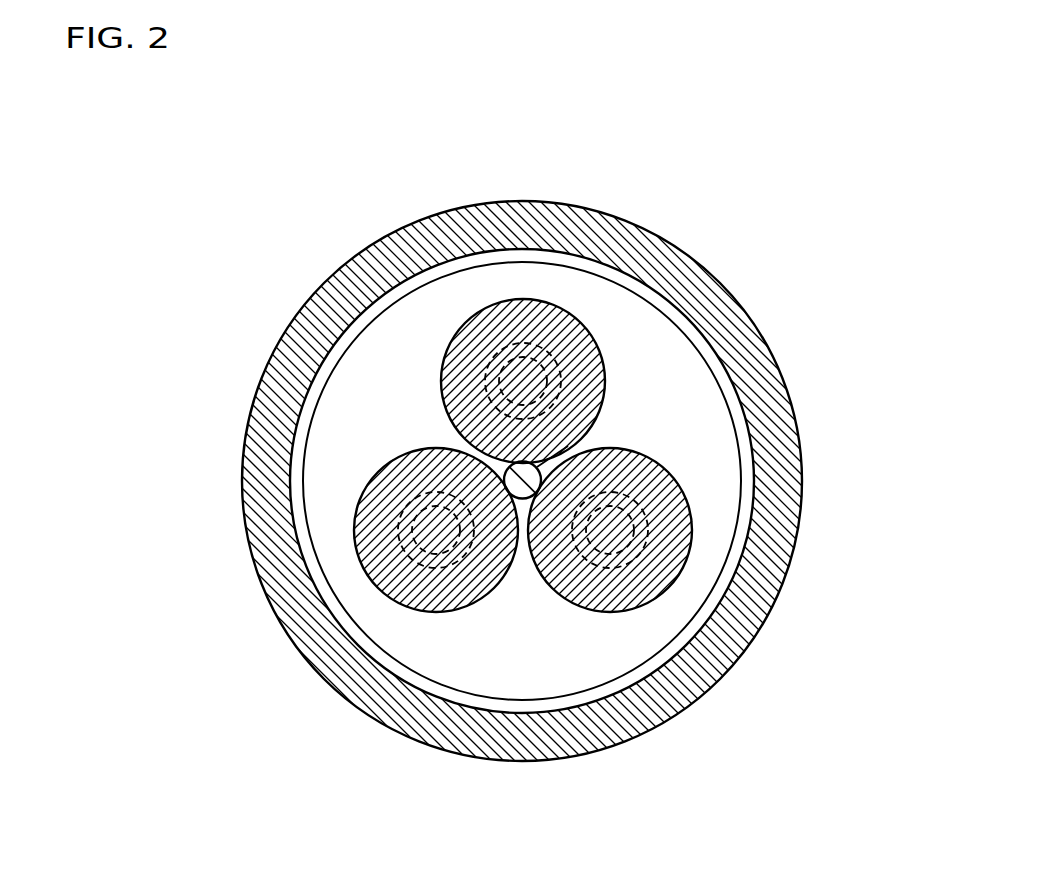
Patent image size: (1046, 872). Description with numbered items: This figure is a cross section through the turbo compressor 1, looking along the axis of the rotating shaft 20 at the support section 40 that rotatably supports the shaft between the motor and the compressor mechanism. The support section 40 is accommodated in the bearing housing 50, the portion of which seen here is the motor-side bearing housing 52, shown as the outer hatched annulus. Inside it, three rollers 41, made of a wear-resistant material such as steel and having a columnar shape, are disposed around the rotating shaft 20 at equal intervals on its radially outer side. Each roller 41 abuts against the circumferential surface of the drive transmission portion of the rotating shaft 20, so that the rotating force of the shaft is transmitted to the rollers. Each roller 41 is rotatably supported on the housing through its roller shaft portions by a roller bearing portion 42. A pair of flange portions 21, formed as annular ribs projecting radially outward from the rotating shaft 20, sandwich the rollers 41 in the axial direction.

The turbo compressor 1 is at (742, 113).
The rotating shaft 20 is at (389, 604).
The flange portions 21 is at (508, 469).
The support section 40 is at (523, 529).
The rollers 41 is at (460, 367).
The roller bearing portion 42 is at (497, 400).
The bearing housing 50 is at (524, 461).
The motor-side bearing housing 52 is at (603, 240).